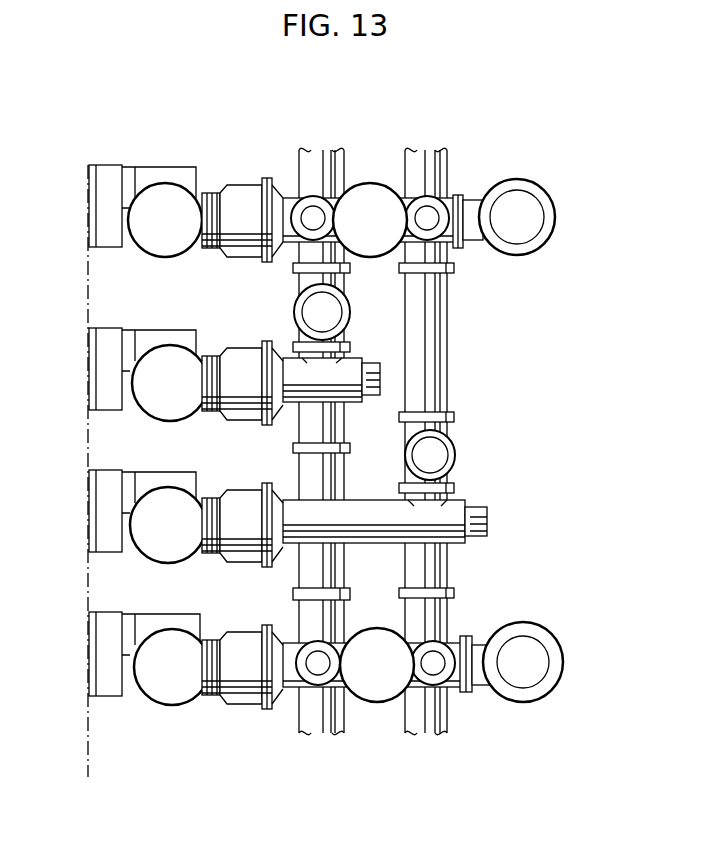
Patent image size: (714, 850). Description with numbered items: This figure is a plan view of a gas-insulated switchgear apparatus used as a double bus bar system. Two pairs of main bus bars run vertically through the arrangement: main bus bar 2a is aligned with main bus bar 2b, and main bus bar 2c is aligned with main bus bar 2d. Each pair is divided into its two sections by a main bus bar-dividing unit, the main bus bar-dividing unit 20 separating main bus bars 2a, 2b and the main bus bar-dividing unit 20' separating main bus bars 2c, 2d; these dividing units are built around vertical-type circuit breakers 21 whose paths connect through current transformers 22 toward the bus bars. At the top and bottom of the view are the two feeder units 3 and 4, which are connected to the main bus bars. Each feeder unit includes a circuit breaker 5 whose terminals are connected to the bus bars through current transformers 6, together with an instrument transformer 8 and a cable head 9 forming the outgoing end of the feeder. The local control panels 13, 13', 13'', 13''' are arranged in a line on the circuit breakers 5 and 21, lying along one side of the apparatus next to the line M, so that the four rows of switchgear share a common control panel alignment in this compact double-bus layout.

The main bus bar 2a is at (300, 268).
The main bus bar 2b is at (298, 432).
The main bus bar 2c is at (448, 345).
The main bus bar 2d is at (440, 568).
The feeder unit 3 is at (596, 213).
The feeder unit 4 is at (608, 665).
The circuit breaker 5 is at (165, 195).
The current transformer 6 is at (243, 200).
The instrument transformer 8 is at (371, 194).
The cable head 9 is at (511, 210).
The local control panel 13 is at (76, 206).
The local control panel 13' is at (74, 369).
The local control panel 13'' is at (75, 654).
The local control panel 13''' is at (73, 511).
The main bus bar-dividing unit 20 is at (547, 376).
The main bus bar-dividing unit 20' is at (425, 521).
The circuit breaker 21 is at (170, 357).
The current transformer 22 is at (250, 358).
The center line M is at (92, 486).